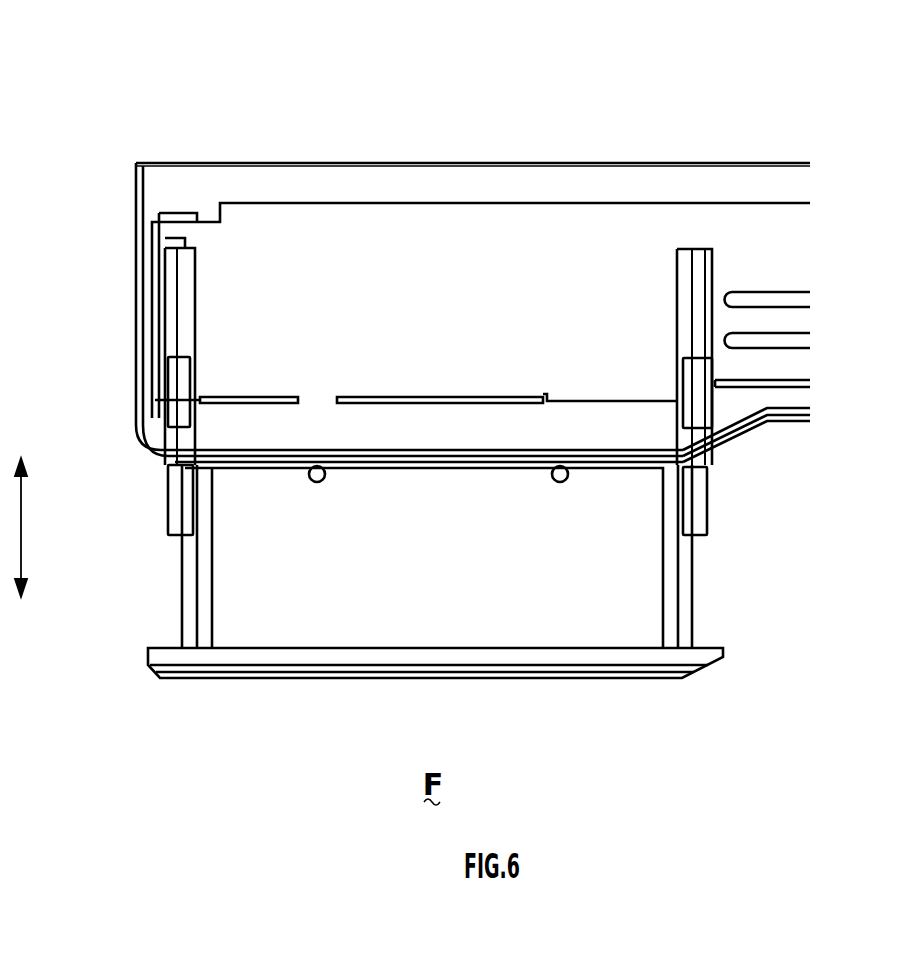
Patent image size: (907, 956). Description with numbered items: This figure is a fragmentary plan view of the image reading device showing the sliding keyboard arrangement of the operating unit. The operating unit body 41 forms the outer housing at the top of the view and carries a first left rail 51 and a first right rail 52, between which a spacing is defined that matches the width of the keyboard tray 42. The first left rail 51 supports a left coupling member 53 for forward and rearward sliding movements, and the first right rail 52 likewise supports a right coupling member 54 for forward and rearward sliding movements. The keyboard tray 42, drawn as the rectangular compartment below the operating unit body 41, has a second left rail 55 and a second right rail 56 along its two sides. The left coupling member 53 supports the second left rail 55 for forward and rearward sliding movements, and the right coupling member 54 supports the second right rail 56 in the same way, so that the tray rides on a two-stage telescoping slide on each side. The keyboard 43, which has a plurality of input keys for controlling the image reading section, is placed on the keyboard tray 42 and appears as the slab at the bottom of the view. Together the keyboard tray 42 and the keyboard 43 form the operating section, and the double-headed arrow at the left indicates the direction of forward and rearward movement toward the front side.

The operating unit body 41 is at (305, 230).
The keyboard tray 42 is at (672, 592).
The keyboard 43 is at (640, 625).
The first left rail 51 is at (172, 282).
The first right rail 52 is at (703, 277).
The left coupling member 53 is at (180, 437).
The right coupling member 54 is at (698, 463).
The second left rail 55 is at (190, 602).
The second right rail 56 is at (687, 562).